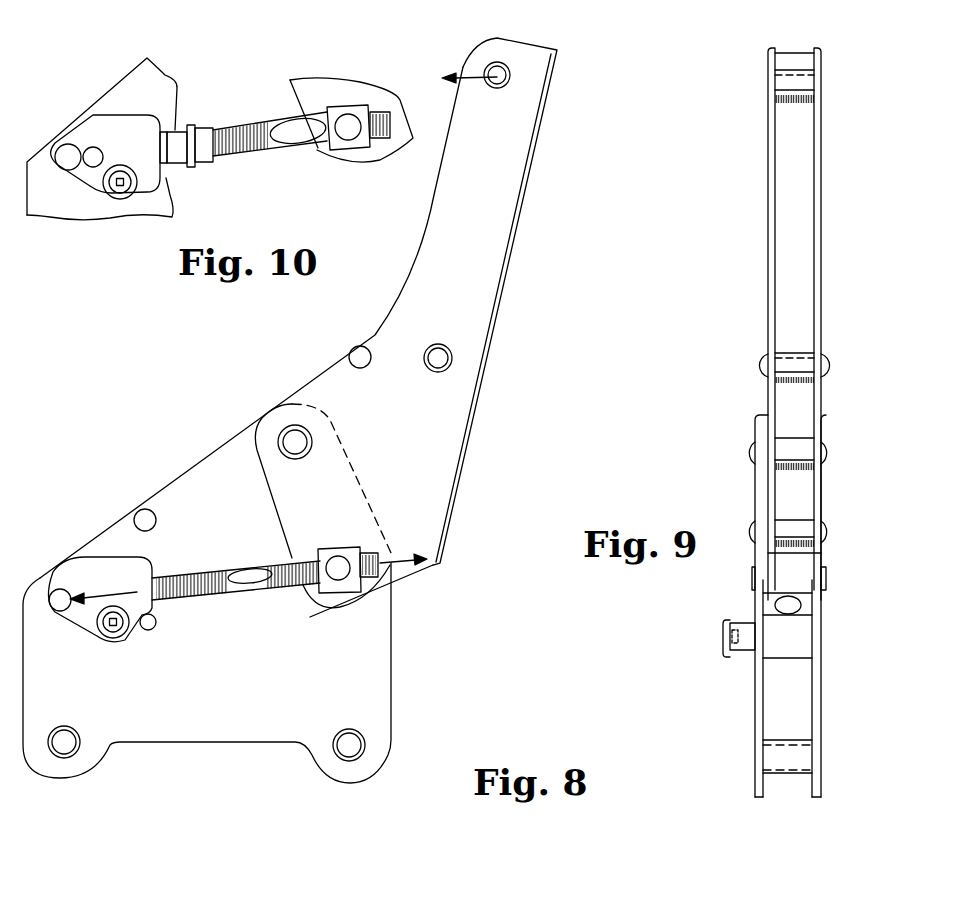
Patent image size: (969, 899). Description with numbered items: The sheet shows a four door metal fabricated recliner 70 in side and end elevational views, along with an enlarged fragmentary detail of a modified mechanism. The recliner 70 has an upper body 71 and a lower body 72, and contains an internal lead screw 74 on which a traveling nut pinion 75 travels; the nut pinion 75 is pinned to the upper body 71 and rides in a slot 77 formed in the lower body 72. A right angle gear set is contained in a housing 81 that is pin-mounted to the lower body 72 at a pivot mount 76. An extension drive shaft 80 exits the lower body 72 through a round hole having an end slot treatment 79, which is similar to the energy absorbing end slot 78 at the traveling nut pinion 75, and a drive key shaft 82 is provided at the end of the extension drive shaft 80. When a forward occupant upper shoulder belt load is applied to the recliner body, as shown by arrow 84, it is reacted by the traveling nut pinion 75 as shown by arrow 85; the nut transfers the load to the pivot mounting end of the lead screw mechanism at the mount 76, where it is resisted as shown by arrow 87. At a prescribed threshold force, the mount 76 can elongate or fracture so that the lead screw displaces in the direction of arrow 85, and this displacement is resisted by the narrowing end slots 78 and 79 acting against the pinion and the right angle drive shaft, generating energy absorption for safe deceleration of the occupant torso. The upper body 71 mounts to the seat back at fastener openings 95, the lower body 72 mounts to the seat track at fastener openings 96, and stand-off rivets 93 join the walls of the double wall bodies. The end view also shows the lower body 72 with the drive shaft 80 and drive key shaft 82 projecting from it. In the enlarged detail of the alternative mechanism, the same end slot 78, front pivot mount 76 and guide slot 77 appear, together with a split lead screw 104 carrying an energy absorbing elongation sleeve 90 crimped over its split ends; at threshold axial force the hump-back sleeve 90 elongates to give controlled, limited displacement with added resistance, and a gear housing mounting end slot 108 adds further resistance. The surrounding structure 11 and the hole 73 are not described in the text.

In FIG. 10, the mounting frame member 11 is at (173, 207).
In FIG. 8, the recliner 70 is at (556, 244).
In FIG. 8, the upper body 71 is at (416, 256).
In FIG. 9, the upper body 71 is at (770, 50).
In FIG. 8, the lower body 72 is at (392, 657).
In FIG. 9, the lower body 72 is at (755, 415).
In FIG. 8, the pivot bracket hole 73 is at (285, 428).
In FIG. 9, the pivot bracket hole 73 is at (752, 453).
In FIG. 8, the lead screw 74 is at (226, 577).
In FIG. 8, the traveling nut pinion 75 is at (358, 585).
In FIG. 10, the traveling nut pinion 75 is at (333, 107).
In FIG. 8, the pivot mount 76 is at (52, 592).
In FIG. 10, the pivot mount 76 is at (63, 145).
In FIG. 8, the slot 77 is at (293, 592).
In FIG. 10, the slot 77 is at (275, 147).
In FIG. 8, the energy absorbing end slot 78 is at (368, 553).
In FIG. 10, the energy absorbing end slot 78 is at (378, 113).
In FIG. 8, the end slot treatment 79 is at (152, 635).
In FIG. 8, the extension drive shaft 80 is at (103, 640).
In FIG. 10, the extension drive shaft 80 is at (120, 182).
In FIG. 9, the extension drive shaft 80 is at (737, 655).
In FIG. 8, the housing 81 is at (143, 557).
In FIG. 10, the housing 81 is at (109, 154).
In FIG. 8, the drive key shaft 82 is at (117, 628).
In FIG. 9, the drive key shaft 82 is at (722, 638).
In FIG. 8, the arrow 84 is at (476, 75).
In FIG. 8, the arrow 85 is at (405, 560).
In FIG. 8, the arrow 87 is at (100, 590).
In FIG. 10, the energy absorbing elongation sleeve 90 is at (190, 127).
In FIG. 8, the stand-off rivets 93 is at (365, 346).
In FIG. 9, the stand-off rivets 93 is at (762, 363).
In FIG. 8, the fastener openings 95 is at (443, 358).
In FIG. 9, the fastener openings 95 is at (770, 80).
In FIG. 8, the fastener openings 96 is at (68, 744).
In FIG. 9, the fastener openings 96 is at (752, 752).
In FIG. 10, the split lead screw 104 is at (243, 157).
In FIG. 10, the gear housing mounting end slot 108 is at (99, 148).